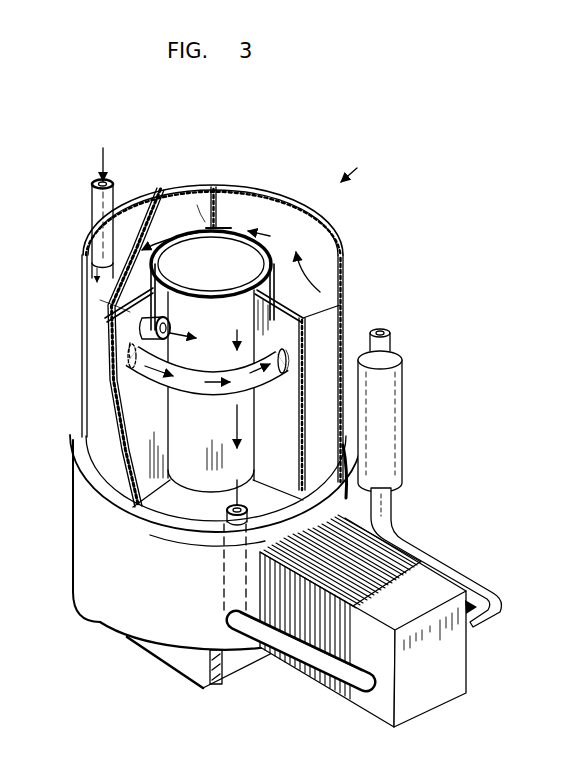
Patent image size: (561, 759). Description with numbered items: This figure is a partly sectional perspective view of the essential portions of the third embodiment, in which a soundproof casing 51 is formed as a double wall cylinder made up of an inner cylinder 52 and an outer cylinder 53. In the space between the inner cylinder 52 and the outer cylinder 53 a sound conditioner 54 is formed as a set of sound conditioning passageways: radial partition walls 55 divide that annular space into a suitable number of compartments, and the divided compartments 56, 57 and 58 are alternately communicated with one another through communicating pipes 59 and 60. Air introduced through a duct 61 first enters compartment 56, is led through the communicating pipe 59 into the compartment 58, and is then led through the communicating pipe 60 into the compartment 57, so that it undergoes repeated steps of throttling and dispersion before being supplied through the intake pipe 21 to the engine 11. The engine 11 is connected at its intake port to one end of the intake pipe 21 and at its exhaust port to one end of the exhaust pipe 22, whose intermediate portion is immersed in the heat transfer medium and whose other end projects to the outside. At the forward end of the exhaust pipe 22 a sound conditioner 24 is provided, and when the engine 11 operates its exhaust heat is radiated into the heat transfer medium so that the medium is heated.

The engine 11 is at (88, 537).
The intake pipe 21 is at (323, 672).
The exhaust pipe 22 is at (472, 588).
The sound conditioner 24 is at (392, 430).
The soundproof casing 51 is at (365, 164).
The inner cylinder 52 is at (270, 248).
The outer cylinder 53 is at (340, 257).
The sound conditioner 54 is at (138, 282).
The radial partition walls 55 is at (220, 208).
The compartment 56 is at (197, 205).
The compartment 57 is at (292, 356).
The compartment 58 is at (270, 210).
The communicating pipe 59 is at (187, 382).
The communicating pipe 60 is at (167, 237).
The duct 61 is at (88, 206).